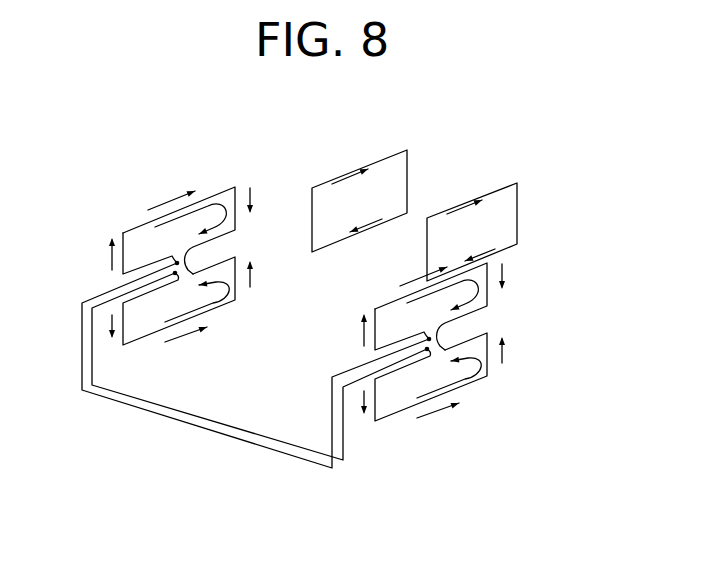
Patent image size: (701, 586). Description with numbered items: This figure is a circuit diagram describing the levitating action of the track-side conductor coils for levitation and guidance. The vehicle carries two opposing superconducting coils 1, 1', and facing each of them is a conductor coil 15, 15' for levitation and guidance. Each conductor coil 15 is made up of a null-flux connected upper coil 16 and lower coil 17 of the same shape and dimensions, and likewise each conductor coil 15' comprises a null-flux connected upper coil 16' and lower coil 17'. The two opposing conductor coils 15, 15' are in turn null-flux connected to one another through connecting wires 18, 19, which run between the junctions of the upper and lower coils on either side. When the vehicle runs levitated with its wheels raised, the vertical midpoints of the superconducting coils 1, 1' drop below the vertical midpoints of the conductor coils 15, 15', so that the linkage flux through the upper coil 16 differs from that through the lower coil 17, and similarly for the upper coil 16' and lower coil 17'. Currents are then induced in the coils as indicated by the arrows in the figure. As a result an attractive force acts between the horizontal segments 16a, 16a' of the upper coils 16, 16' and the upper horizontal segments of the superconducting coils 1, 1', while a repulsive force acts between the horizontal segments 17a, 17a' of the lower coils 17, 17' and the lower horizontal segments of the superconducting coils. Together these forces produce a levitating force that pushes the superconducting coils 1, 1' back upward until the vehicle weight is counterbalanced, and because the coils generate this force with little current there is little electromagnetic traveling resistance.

The superconducting coil 1 is at (382, 177).
The superconducting coil 1' is at (502, 210).
The conductor coil for levitation and guidance 15 is at (198, 229).
The conductor coil for levitation and guidance 15' is at (487, 339).
The upper coil 16 is at (216, 215).
The upper coil 16' is at (479, 307).
The horizontal segment of upper coil 16a is at (163, 190).
The horizontal segment of upper coil 16a' is at (408, 274).
The lower coil 17 is at (212, 301).
The lower coil 17' is at (471, 377).
The horizontal segment of lower coil 17a is at (178, 356).
The horizontal segment of lower coil 17a' is at (428, 436).
The connecting wire 18 is at (198, 424).
The connecting wire 19 is at (212, 418).